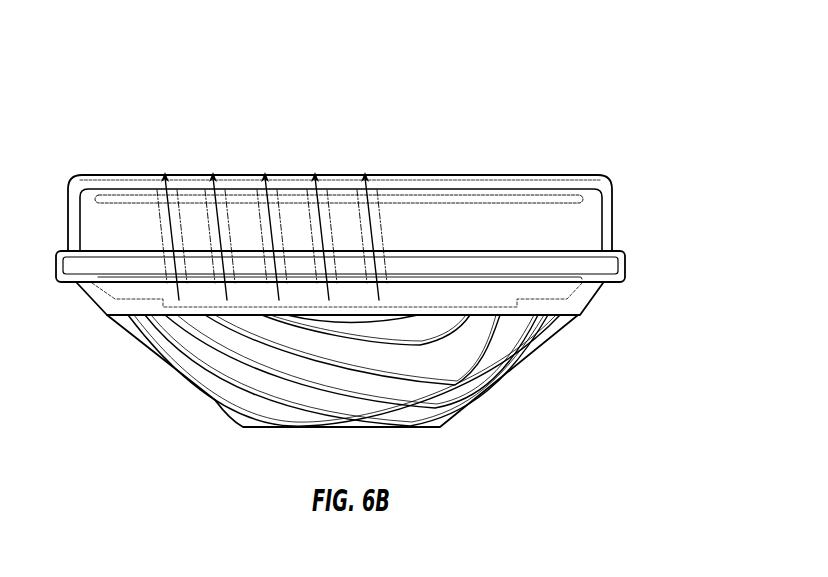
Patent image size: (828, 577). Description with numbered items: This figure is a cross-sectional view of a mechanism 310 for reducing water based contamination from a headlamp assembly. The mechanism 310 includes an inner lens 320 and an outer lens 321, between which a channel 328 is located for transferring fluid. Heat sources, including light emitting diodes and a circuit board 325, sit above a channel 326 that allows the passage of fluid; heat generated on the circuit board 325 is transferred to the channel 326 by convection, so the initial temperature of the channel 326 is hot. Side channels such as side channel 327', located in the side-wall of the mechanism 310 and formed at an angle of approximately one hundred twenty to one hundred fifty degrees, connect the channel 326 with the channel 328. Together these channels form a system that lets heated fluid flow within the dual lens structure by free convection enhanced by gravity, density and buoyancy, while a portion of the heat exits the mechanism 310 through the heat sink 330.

The mechanism 310 is at (520, 393).
The inner lens 320 is at (578, 187).
The outer lens 321 is at (568, 175).
The circuit board 325 is at (157, 273).
The channel 326 is at (595, 298).
The side channel 327' is at (272, 213).
The channel 328 is at (503, 186).
The heat sink 330 is at (217, 413).